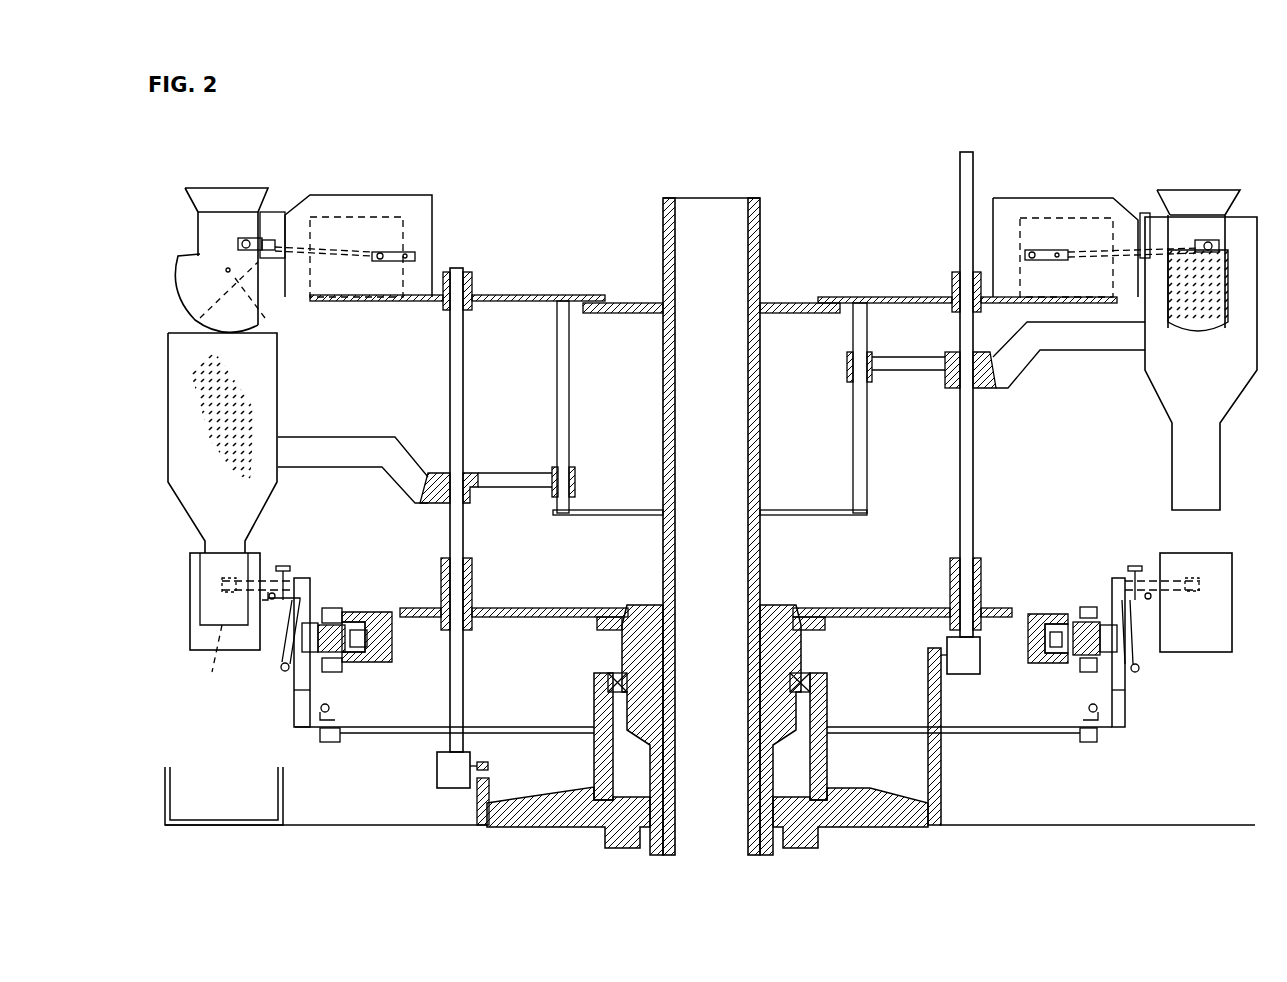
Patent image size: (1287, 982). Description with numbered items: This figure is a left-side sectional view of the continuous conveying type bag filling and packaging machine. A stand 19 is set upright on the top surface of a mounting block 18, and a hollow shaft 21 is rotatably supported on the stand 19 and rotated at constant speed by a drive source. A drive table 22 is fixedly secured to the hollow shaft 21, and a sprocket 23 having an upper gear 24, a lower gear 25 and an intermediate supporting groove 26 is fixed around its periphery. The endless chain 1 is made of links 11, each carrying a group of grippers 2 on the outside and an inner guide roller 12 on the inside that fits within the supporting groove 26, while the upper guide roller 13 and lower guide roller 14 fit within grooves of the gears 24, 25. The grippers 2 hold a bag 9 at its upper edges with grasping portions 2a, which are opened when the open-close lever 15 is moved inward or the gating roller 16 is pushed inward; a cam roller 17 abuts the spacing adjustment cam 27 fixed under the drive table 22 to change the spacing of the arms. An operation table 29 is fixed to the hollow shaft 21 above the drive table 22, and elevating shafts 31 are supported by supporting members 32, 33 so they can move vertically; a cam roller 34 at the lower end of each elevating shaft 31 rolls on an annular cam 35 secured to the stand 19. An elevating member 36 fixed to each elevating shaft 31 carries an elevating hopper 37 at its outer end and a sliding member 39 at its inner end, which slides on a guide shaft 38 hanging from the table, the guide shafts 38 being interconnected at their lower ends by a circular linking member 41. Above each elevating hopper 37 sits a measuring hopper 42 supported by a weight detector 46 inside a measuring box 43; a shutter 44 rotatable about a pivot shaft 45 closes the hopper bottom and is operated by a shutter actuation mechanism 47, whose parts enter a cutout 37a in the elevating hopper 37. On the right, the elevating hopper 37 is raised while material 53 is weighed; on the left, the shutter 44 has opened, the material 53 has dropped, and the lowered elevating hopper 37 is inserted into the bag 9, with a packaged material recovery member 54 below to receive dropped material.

The endless chain 1 is at (701, 623).
The grippers 2 is at (270, 556).
The grasping portions 2a is at (208, 695).
The bag 9 is at (192, 589).
The links 11 is at (330, 622).
The inner guide roller 12 is at (380, 653).
The upper guide roller 13 is at (332, 608).
The lower guide roller 14 is at (328, 672).
The open-close lever 15 is at (282, 655).
The gating roller 16 is at (288, 575).
The cam roller 17 is at (330, 742).
The mounting block 18 is at (1035, 835).
The stand 19 is at (822, 705).
The hollow shaft 21 is at (755, 545).
The drive table 22 is at (543, 608).
The sprocket 23 is at (1022, 698).
The upper gear 24 is at (1040, 614).
The lower gear 25 is at (1053, 662).
The supporting groove 26 is at (1045, 648).
The spacing adjustment cam 27 is at (385, 731).
The operation table 29 is at (530, 295).
The elevating shaft 31 is at (456, 409).
The supporting member 32 is at (470, 578).
The supporting member 33 is at (471, 283).
The cam roller 34 is at (489, 762).
The annular cam 35 is at (477, 797).
The elevating member 36 is at (382, 437).
The elevating hopper 37 is at (712, 385).
The cutout 37a is at (277, 376).
The guide shaft 38 is at (566, 376).
The sliding member 39 is at (576, 481).
The circular linking member 41 is at (557, 518).
The measuring hopper 42 is at (683, 265).
The measuring box 43 is at (739, 226).
The shutter 44 is at (182, 272).
The pivot shaft 45 is at (230, 276).
The weight detector 46 is at (357, 225).
The shutter actuation mechanism 47 is at (1103, 245).
The material to be packaged 53 is at (210, 462).
The packaged material recovery member 54 is at (283, 797).